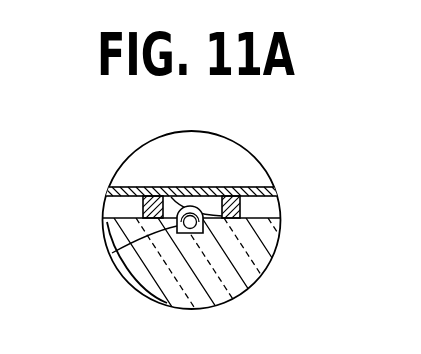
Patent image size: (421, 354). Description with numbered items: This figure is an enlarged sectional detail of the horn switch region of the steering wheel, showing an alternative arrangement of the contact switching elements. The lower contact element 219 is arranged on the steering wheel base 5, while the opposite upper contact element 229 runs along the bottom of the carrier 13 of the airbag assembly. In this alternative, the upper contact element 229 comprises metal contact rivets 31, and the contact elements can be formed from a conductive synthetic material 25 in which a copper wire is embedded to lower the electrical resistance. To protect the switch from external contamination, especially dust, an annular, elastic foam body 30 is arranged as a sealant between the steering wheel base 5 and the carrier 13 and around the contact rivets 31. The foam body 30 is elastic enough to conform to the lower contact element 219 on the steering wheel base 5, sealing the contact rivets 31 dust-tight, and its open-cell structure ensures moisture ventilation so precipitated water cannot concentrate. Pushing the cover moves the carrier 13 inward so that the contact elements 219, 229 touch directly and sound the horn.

The steering wheel base 5 is at (240, 272).
The carrier 13 is at (270, 190).
The conductive synthetic material 25 is at (177, 226).
The elastic foam body 30 is at (174, 199).
The contact rivets 31 is at (112, 253).
The lower contact element 219 is at (203, 227).
The upper contact element 229 is at (236, 212).